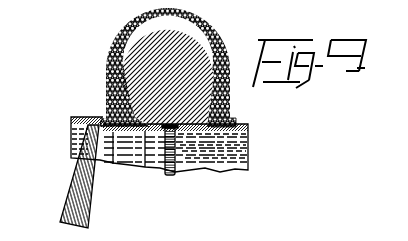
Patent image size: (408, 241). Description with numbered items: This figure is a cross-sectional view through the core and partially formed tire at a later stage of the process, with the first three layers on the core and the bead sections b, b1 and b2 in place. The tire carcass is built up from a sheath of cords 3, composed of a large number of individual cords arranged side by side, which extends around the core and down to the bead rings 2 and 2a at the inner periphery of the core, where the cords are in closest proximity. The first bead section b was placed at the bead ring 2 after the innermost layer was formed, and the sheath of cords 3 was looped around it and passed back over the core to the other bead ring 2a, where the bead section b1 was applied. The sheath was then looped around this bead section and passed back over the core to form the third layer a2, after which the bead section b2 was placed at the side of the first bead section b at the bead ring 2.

The third layer a2 is at (131, 19).
The bead ring 2 is at (142, 164).
The bead ring 2a is at (242, 159).
The first bead section b is at (74, 116).
The bead section b1 is at (233, 116).
The bead section b2 is at (113, 164).
The sheath of cords 3 is at (63, 197).